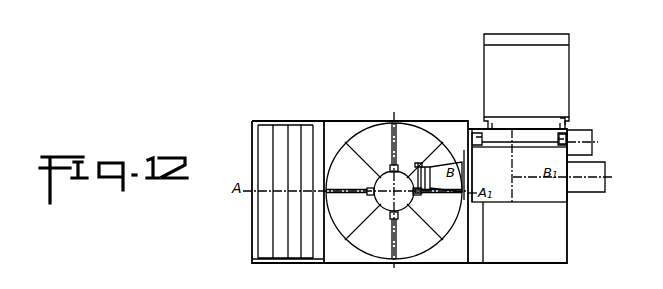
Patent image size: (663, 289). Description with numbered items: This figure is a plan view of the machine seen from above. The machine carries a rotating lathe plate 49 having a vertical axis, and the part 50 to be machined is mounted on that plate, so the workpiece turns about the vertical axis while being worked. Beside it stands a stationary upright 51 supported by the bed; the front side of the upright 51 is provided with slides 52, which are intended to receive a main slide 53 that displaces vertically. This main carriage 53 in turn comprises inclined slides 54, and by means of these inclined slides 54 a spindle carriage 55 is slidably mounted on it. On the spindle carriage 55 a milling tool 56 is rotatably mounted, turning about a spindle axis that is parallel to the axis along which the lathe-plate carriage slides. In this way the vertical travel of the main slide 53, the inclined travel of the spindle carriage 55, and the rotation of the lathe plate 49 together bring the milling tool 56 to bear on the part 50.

The rotating lathe plate 49 is at (372, 148).
The part to be machined 50 is at (387, 205).
The stationary upright 51 is at (552, 60).
The slides 52 is at (562, 117).
The main slide 53 is at (527, 122).
The inclined slides 54 is at (567, 137).
The spindle carriage 55 is at (545, 198).
The milling tool 56 is at (419, 162).